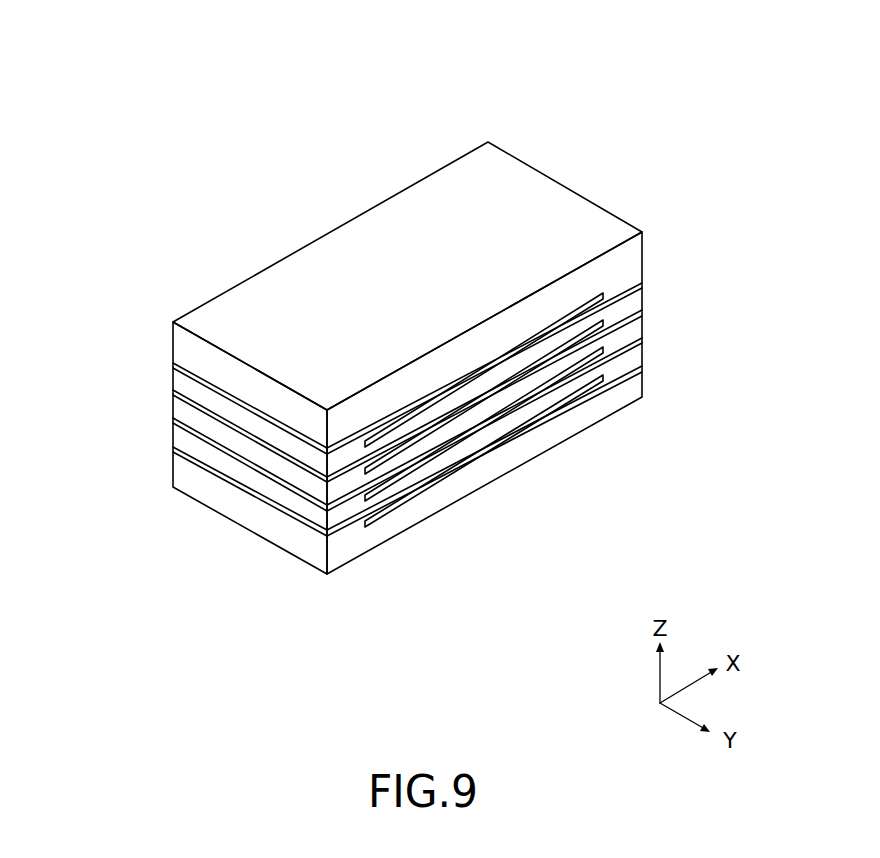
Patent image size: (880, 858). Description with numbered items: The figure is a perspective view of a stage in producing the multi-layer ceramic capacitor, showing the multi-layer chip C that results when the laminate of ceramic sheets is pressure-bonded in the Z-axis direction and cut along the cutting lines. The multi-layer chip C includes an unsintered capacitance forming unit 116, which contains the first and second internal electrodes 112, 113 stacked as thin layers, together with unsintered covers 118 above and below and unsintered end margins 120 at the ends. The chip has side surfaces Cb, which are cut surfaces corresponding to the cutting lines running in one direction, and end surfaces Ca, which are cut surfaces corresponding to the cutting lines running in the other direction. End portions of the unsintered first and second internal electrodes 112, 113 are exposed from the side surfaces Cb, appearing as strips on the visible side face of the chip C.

The multi-layer chip C is at (549, 114).
The end surfaces Ca is at (178, 467).
The side surfaces Cb is at (502, 460).
The first internal electrodes 112 is at (173, 364).
The second internal electrodes 113 is at (642, 285).
The capacitance forming unit 116 is at (457, 426).
The covers 118 is at (268, 397).
The end margins 120 is at (242, 420).